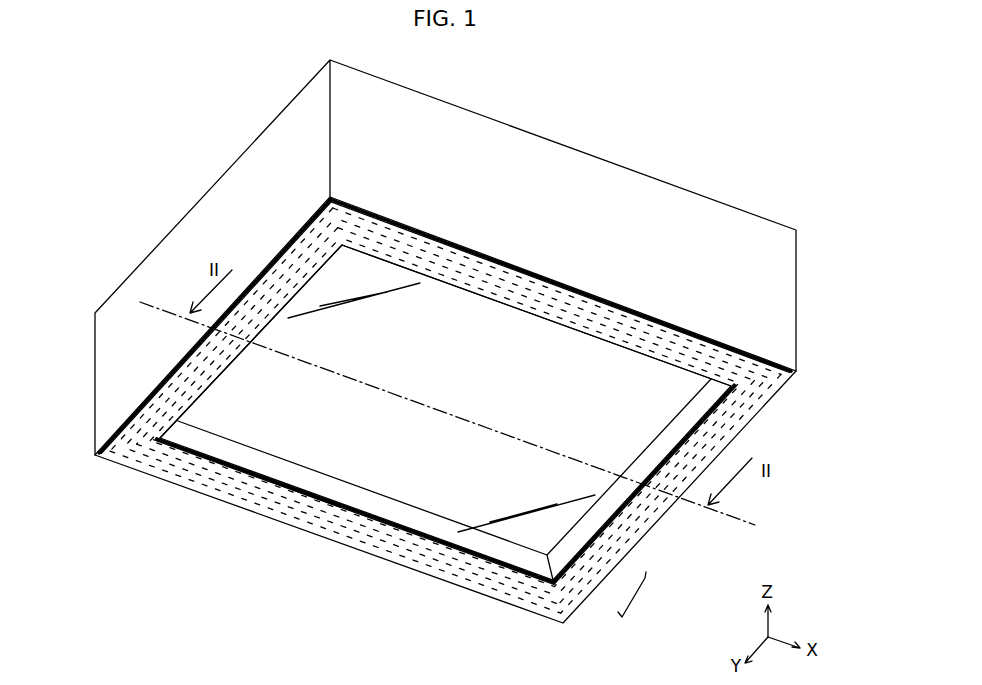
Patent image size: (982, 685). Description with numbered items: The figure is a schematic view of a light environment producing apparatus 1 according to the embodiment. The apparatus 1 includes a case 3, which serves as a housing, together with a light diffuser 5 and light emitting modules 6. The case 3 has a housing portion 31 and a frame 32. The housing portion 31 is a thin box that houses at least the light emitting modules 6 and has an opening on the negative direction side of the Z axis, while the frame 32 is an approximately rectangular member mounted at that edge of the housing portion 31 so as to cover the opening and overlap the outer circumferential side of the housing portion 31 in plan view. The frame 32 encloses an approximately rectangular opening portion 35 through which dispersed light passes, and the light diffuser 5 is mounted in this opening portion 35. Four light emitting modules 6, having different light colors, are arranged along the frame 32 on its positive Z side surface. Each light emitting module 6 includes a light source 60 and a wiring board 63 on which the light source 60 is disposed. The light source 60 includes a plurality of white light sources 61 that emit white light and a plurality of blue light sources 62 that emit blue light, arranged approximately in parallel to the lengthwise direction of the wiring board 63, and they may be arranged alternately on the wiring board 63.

The light environment producing apparatus 1 is at (681, 96).
The case 3 is at (476, 410).
The housing portion 31 is at (786, 348).
The frame 32 is at (797, 373).
The opening portion 35 is at (293, 488).
The light diffuser 5 is at (386, 447).
The light emitting module 6 is at (451, 426).
The light source 60 is at (642, 594).
The white light source 61 is at (566, 591).
The blue light source 62 is at (583, 570).
The wiring board 63 is at (630, 538).